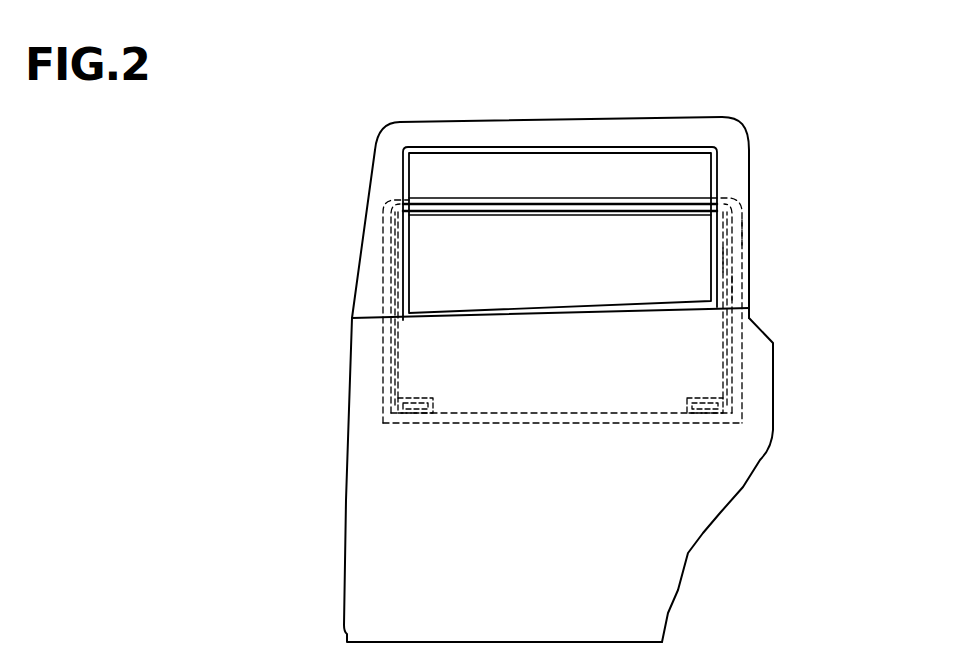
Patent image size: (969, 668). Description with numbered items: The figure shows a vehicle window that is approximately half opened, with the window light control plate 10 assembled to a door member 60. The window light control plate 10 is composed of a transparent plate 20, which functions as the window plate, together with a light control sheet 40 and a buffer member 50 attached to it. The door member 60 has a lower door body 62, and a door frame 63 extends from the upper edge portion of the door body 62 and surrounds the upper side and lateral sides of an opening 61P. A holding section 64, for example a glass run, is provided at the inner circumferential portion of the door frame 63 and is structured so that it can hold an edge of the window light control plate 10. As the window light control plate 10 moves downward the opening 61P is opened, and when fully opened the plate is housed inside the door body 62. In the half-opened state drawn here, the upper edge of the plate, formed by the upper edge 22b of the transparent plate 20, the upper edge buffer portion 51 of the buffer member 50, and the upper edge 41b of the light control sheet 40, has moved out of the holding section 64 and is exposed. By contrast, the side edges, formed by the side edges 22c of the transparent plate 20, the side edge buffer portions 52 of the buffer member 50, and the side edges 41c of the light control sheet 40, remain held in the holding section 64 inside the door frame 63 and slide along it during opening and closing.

The window light control plate 10 is at (442, 433).
The transparent plate 20 is at (380, 240).
The upper edge of the transparent plate 22b is at (450, 202).
The side edges of the transparent plate 22c is at (737, 230).
The light control sheet 40 is at (382, 293).
The upper edge of the light control sheet 41b is at (555, 220).
The side edges of the light control sheet 41c is at (720, 258).
The buffer member 50 is at (382, 265).
The upper edge buffer portion 51 is at (613, 210).
The side edge buffer portions 52 is at (733, 285).
The door member 60 is at (385, 127).
The opening 61P is at (483, 150).
The door body 62 is at (742, 462).
The door frame 63 is at (737, 128).
The holding section 64 is at (563, 150).